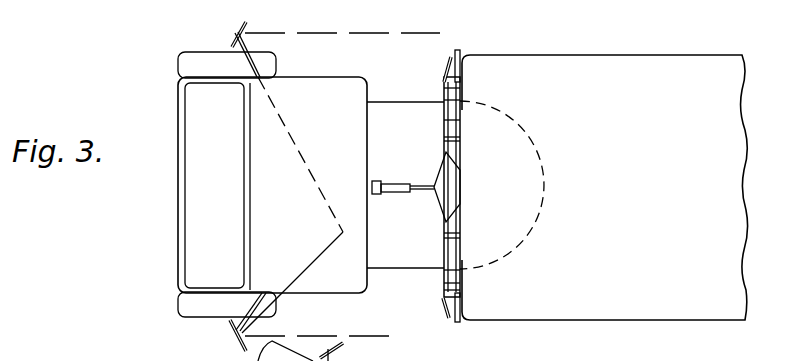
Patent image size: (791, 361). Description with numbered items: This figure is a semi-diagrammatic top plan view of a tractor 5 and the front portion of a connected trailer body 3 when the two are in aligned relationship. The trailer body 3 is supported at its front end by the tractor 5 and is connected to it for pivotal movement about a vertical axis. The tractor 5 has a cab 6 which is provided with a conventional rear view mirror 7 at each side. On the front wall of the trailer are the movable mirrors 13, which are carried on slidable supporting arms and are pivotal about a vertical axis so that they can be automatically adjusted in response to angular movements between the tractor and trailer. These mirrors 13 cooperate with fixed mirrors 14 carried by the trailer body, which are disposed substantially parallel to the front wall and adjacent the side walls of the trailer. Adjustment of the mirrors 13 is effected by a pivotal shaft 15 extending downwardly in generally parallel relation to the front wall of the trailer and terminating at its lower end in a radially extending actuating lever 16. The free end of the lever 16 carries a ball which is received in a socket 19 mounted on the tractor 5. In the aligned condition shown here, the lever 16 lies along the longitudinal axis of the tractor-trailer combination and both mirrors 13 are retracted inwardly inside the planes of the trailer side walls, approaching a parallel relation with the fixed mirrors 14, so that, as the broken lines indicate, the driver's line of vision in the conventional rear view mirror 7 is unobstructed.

The trailer body 3 is at (683, 320).
The tractor 5 is at (403, 278).
The cab 6 is at (366, 150).
The rear view mirror 7 is at (233, 38).
The mirror 13 is at (444, 76).
The fixed mirror 14 is at (460, 52).
The pivotal shaft 15 is at (443, 128).
The actuating lever 16 is at (425, 196).
The socket 19 is at (376, 196).